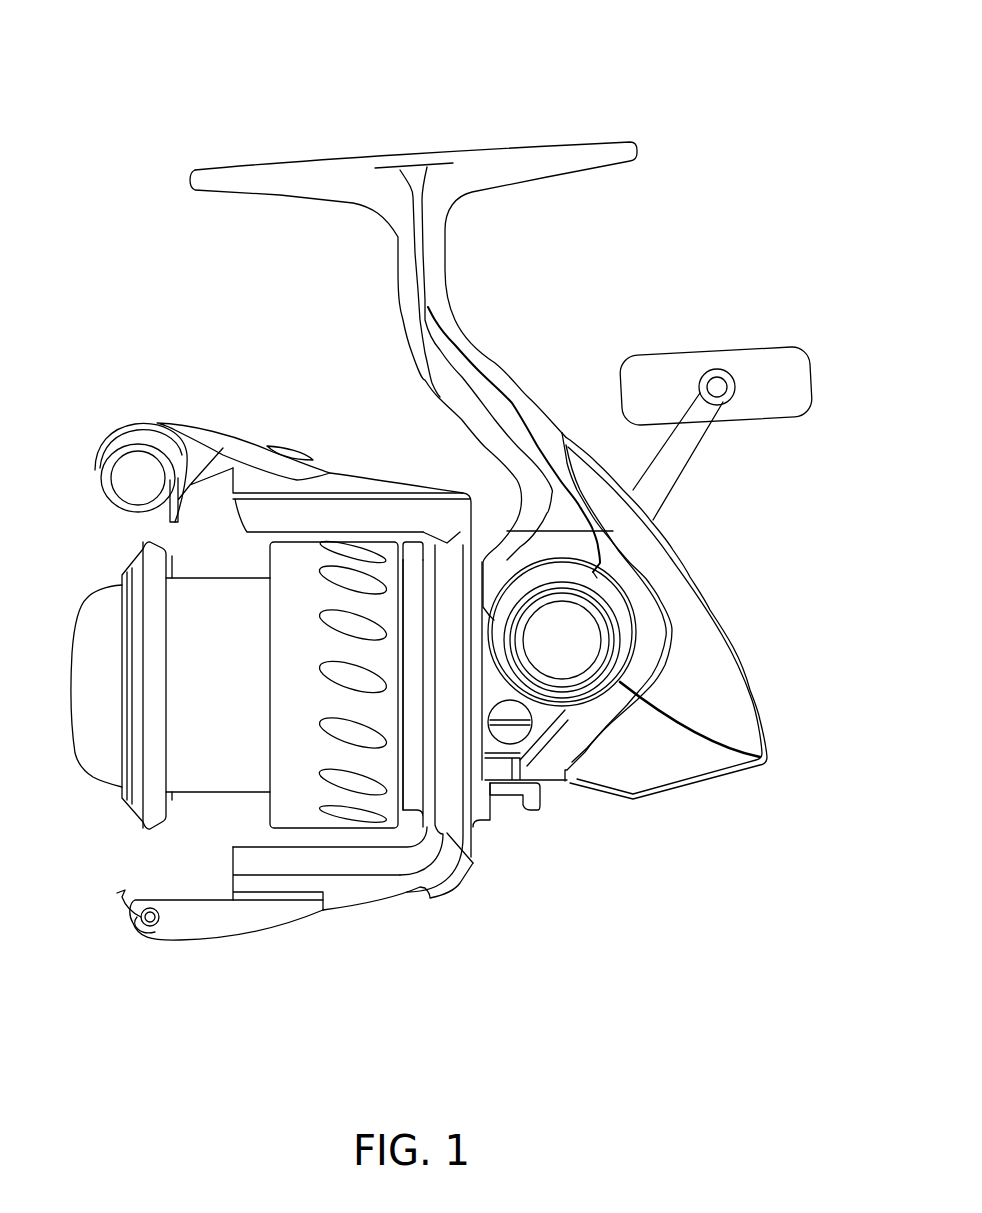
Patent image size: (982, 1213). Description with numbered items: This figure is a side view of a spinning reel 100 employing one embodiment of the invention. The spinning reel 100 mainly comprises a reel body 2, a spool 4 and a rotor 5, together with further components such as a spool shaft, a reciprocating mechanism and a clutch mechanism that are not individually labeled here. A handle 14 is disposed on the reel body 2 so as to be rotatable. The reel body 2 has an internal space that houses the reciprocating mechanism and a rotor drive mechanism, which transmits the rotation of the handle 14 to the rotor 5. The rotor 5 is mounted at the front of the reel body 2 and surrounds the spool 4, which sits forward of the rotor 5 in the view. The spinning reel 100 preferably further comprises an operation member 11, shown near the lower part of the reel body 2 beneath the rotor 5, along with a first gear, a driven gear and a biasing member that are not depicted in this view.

The spinning reel 100 is at (652, 116).
The reel body 2 is at (621, 813).
The handle 14 is at (774, 328).
The spool 4 is at (200, 812).
The rotor 5 is at (352, 921).
The operation member 11 is at (517, 813).